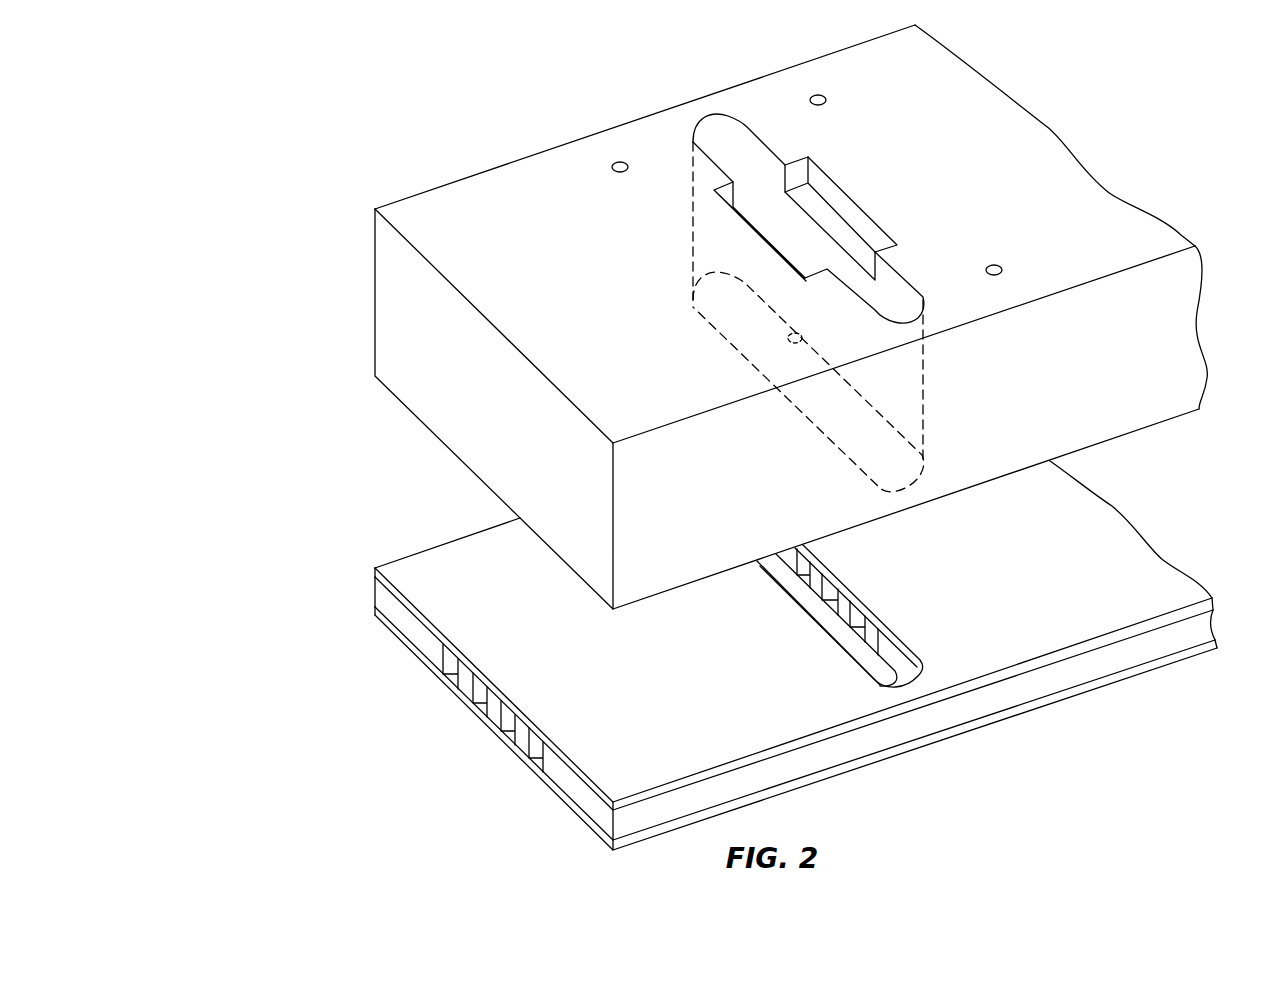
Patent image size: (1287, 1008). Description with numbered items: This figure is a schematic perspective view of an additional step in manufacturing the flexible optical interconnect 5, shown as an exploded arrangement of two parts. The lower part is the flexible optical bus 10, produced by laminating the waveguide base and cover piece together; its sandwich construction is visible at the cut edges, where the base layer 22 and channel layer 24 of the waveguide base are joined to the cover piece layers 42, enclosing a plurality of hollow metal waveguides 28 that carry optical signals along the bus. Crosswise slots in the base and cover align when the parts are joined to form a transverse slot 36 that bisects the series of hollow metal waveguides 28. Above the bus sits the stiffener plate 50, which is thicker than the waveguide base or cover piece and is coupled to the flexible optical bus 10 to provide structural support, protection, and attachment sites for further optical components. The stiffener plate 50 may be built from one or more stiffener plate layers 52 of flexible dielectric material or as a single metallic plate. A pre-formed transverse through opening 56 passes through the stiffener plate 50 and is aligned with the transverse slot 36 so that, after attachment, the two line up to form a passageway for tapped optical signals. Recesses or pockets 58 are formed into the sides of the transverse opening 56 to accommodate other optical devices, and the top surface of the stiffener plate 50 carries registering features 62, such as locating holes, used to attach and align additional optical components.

The flexible optical interconnect 5 is at (240, 248).
The flexible optical bus 10 is at (373, 670).
The base layer 22 is at (1123, 637).
The channel layer 24 is at (1060, 675).
The hollow metal waveguides 28 is at (523, 737).
The transverse slot 36 is at (900, 675).
The cover piece layers 42 is at (1010, 712).
The stiffener plate 50 is at (415, 325).
The stiffener plate layers 52 is at (1073, 411).
The transverse through openings 56 is at (898, 300).
The recesses or pockets 58 is at (845, 212).
The registering features 62 is at (611, 165).